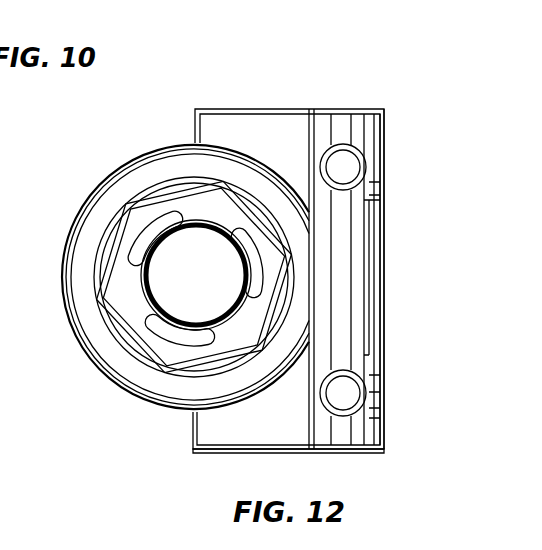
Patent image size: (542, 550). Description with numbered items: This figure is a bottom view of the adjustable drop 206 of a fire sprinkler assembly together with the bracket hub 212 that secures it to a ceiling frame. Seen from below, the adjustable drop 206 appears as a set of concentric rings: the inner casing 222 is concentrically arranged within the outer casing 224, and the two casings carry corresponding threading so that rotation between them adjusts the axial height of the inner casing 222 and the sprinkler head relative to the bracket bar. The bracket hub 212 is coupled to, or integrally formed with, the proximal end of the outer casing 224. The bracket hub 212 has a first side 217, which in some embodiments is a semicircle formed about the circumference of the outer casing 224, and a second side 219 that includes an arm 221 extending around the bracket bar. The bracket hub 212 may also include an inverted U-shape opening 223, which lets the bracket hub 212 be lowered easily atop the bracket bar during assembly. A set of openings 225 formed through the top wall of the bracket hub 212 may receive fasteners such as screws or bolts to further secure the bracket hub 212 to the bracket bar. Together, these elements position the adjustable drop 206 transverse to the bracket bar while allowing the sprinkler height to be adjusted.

The adjustable drop 206 is at (296, 64).
The bracket hub 212 is at (193, 436).
The first side 217 is at (234, 172).
The second side 219 is at (383, 422).
The arm 221 is at (371, 322).
The inner casing 222 is at (123, 310).
The inverted U-shape opening 223 is at (358, 268).
The outer casing 224 is at (113, 382).
The openings 225 is at (356, 167).